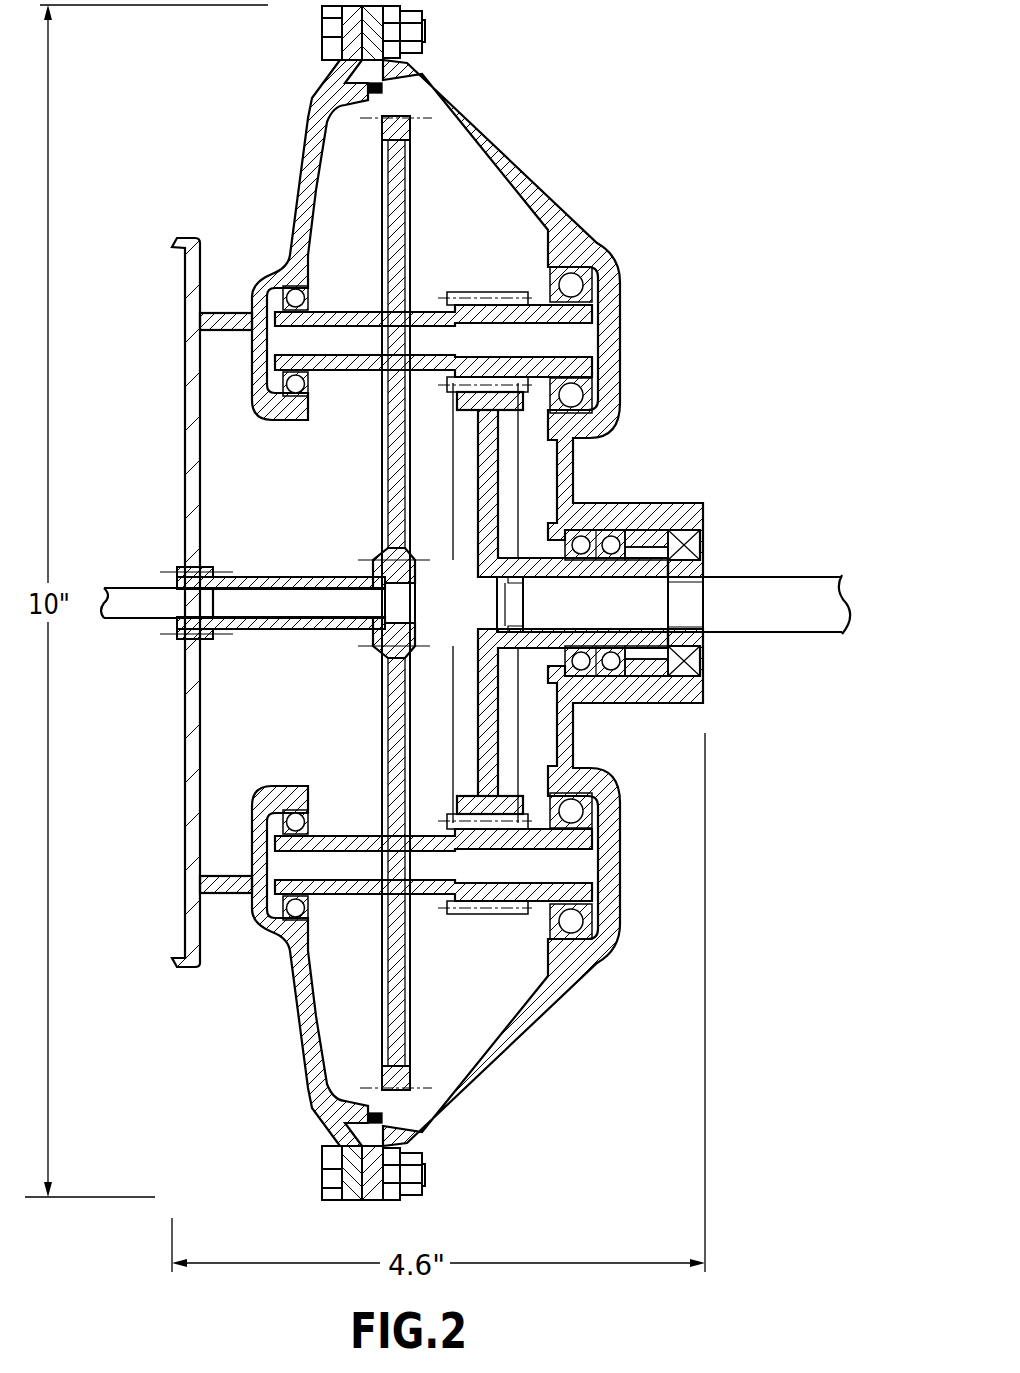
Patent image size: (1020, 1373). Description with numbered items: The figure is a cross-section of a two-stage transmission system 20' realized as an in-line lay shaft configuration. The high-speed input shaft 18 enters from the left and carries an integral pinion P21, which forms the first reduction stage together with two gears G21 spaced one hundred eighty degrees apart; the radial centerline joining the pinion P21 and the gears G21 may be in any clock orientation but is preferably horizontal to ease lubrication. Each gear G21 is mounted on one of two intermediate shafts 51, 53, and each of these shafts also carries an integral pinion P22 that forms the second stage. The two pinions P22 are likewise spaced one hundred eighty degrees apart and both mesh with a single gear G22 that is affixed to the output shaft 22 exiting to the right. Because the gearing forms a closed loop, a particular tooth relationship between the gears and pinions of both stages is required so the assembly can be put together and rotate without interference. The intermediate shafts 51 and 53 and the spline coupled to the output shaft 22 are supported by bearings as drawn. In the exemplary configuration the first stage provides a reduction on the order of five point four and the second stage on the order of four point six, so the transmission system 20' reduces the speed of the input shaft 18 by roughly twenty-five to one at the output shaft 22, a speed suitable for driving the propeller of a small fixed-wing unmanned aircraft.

The input shaft 18 is at (148, 588).
The two-stage transmission system 20' is at (471, 603).
The output shaft 22 is at (762, 577).
The intermediate shaft 51 is at (602, 298).
The intermediate shaft 53 is at (596, 838).
The gear G21 is at (410, 228).
The gear G22 is at (500, 453).
The pinion P21 is at (373, 562).
The pinion P22 is at (510, 292).